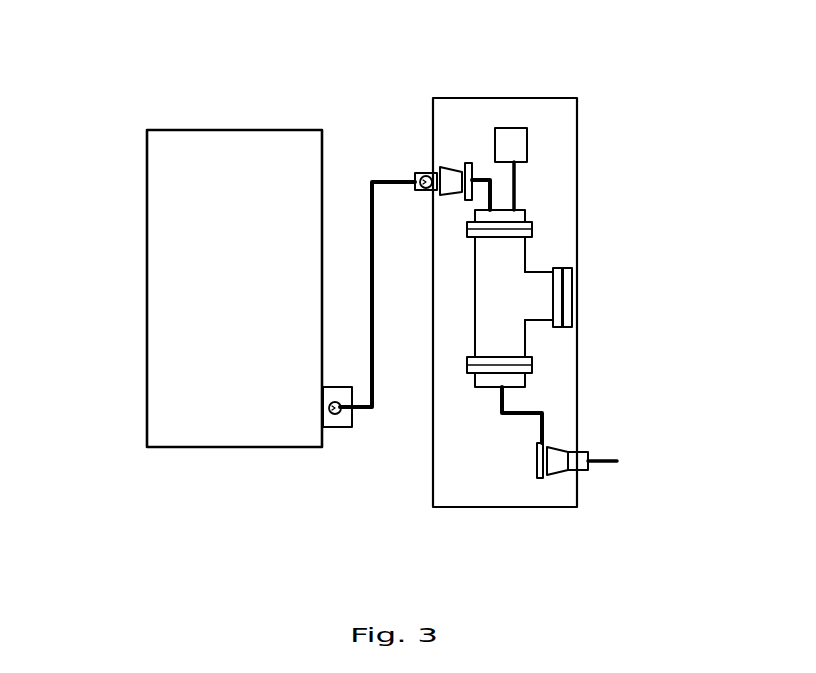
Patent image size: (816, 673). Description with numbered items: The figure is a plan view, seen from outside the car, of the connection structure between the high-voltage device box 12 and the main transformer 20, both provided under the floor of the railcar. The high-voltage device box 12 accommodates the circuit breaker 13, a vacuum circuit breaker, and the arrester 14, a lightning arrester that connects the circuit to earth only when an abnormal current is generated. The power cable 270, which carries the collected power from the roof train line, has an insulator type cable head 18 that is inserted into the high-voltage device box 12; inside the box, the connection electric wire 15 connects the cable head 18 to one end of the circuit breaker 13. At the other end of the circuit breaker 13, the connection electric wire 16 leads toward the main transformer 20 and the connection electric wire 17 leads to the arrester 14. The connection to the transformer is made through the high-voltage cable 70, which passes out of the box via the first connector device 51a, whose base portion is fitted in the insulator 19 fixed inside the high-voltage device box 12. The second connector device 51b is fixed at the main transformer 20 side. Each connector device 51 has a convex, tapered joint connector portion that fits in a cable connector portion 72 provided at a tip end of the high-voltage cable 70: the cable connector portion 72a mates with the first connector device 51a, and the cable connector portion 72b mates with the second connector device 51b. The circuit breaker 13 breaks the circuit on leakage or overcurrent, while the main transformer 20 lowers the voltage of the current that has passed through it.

The high-voltage device box 12 is at (577, 115).
The circuit breaker 13 is at (525, 253).
The arrester 14 is at (522, 127).
The connection electric wire 15 is at (542, 413).
The connection electric wire 16 is at (488, 176).
The connection electric wire 17 is at (515, 182).
The insulator type cable head 18 is at (570, 475).
The insulator 19 is at (445, 165).
The main transformer 20 is at (147, 355).
The connector device 51 is at (397, 287).
The first connector device 51a is at (405, 156).
The second connector device 51b is at (384, 476).
The high-voltage cable 70 is at (372, 182).
The cable connector portion 72 is at (397, 287).
The cable connector portion 72a is at (430, 195).
The cable connector portion 72b is at (336, 427).
The power cable 270 is at (605, 462).